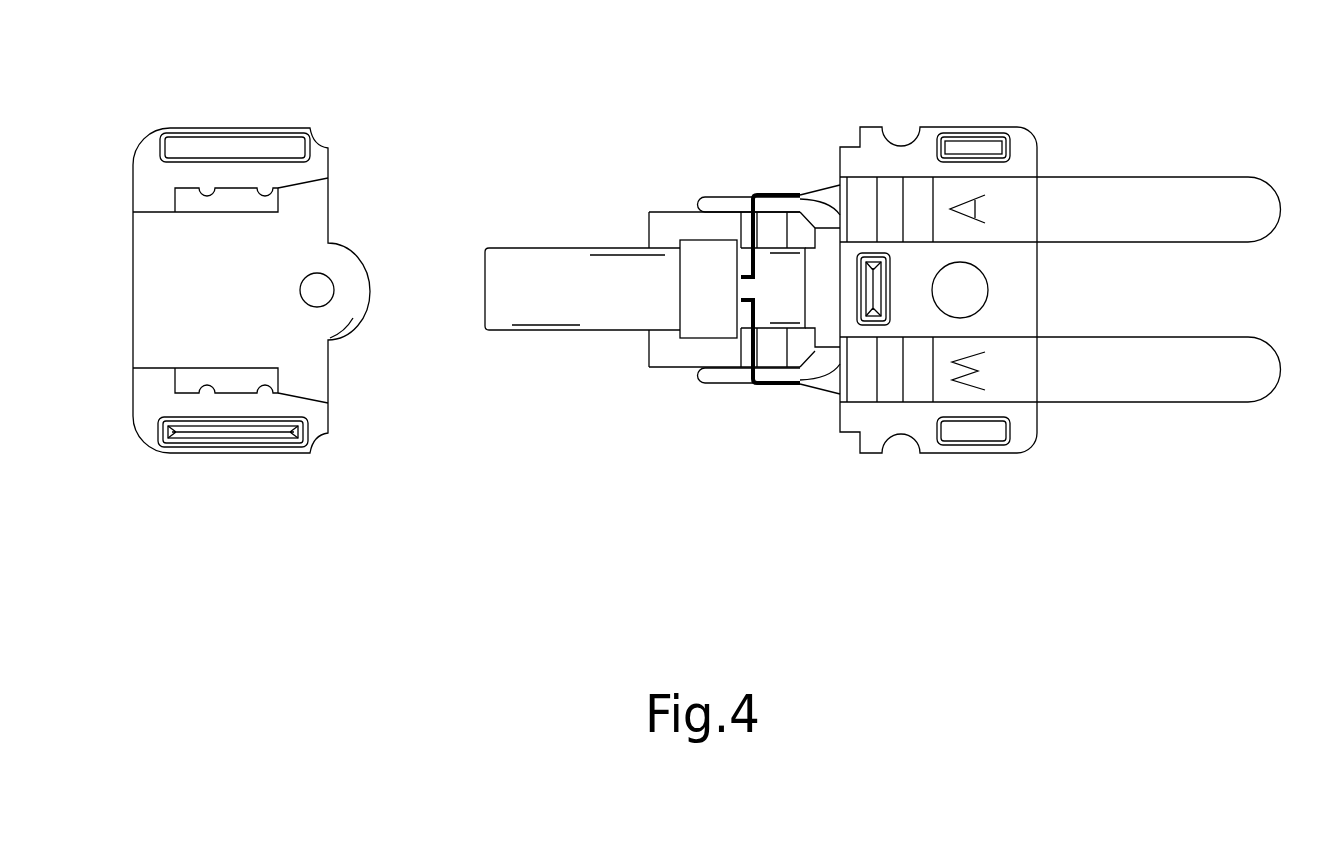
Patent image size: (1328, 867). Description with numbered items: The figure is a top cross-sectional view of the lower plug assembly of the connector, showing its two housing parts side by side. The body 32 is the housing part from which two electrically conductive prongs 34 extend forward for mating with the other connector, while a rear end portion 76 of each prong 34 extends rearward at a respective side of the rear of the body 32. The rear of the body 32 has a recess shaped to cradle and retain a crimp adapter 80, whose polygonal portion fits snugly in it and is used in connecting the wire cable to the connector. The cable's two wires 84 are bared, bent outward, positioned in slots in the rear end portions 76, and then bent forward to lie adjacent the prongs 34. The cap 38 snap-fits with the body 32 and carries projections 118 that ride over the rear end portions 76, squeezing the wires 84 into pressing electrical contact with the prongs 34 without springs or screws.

The body 32 is at (918, 98).
The prongs 34 is at (1253, 203).
The cap 38 is at (117, 145).
The rear end portion 76 is at (720, 200).
The crimp adapter 80 is at (693, 330).
The wires 84 is at (782, 190).
The projections 118 is at (265, 195).